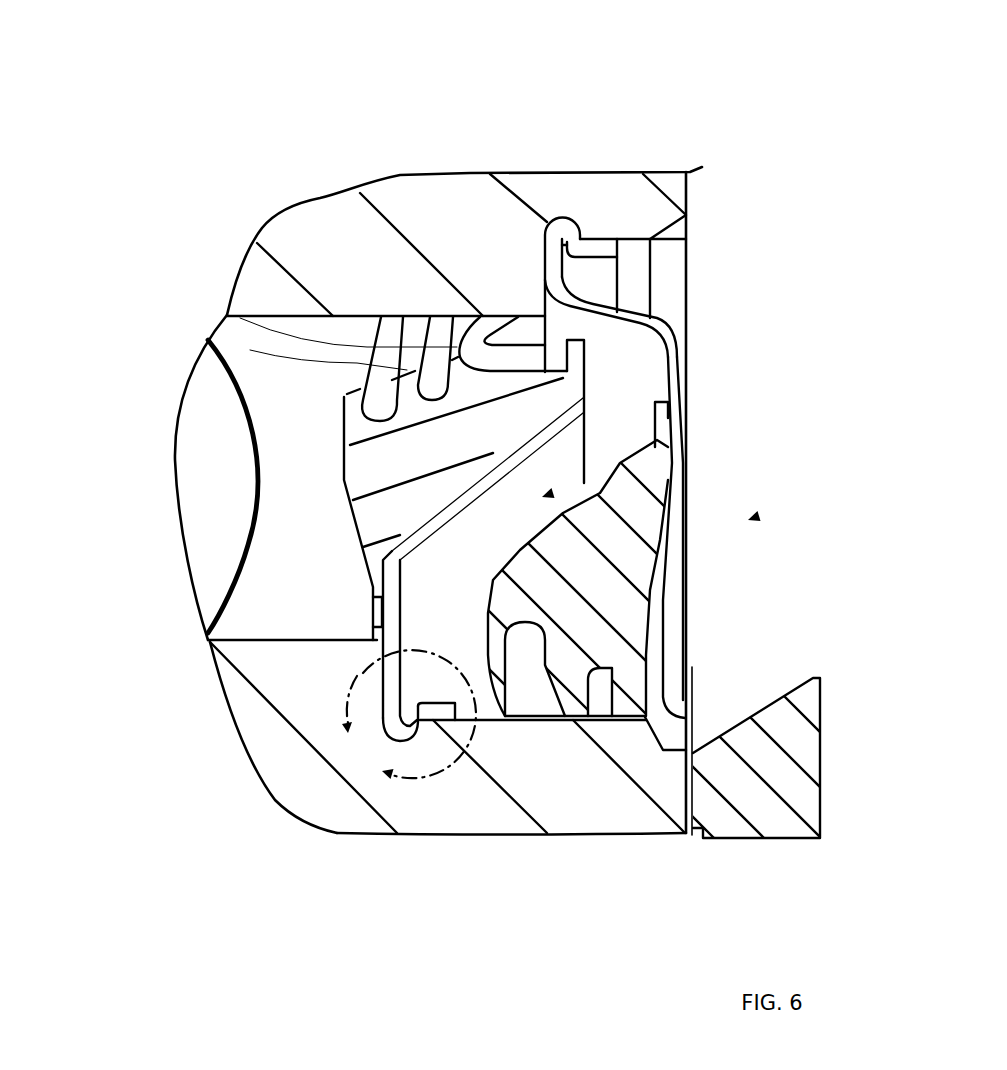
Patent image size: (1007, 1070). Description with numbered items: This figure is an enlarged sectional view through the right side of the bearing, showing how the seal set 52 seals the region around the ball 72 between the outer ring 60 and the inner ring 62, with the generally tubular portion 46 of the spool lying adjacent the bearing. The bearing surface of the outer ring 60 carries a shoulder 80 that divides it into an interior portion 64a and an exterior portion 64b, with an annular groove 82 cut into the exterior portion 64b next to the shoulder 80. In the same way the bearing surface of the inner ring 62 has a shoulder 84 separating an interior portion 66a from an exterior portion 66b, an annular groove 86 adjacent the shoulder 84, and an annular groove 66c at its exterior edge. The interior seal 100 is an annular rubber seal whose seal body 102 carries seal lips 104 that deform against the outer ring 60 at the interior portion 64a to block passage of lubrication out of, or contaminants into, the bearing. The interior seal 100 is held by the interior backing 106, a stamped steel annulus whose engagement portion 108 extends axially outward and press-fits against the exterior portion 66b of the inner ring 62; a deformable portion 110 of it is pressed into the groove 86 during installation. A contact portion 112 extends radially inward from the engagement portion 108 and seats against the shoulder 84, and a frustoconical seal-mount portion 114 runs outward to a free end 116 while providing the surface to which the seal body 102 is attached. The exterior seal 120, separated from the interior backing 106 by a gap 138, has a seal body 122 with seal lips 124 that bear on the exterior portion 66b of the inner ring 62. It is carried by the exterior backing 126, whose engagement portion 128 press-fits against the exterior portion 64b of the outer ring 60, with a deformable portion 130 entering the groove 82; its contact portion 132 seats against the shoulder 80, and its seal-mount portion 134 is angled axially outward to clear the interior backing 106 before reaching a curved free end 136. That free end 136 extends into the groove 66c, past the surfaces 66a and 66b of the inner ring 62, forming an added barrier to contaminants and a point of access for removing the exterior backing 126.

The tubular portion 46 is at (730, 817).
The seal set 52 is at (760, 517).
The outer ring 60 is at (268, 290).
The inner ring 62 is at (283, 760).
The interior portion of bearing surface 64a is at (347, 313).
The exterior portion of bearing surface 64b is at (632, 238).
The interior portion of bearing surface 66a is at (310, 643).
The exterior portion of bearing surface 66b is at (517, 721).
The annular groove 66c is at (692, 835).
The ball 72 is at (197, 533).
The shoulder 80 is at (413, 173).
The annular groove 82 is at (553, 263).
The shoulder 84 is at (372, 712).
The annular groove 86 is at (420, 625).
The interior seal 100 is at (360, 526).
The seal body 102 is at (382, 462).
The seal lips 104 is at (347, 388).
The interior backing 106 is at (383, 608).
The engagement portion 108 is at (420, 625).
The deformable portion 110 is at (425, 660).
The contact portion 112 is at (393, 730).
The seal-mount portion 114 is at (468, 490).
The free end 116 is at (587, 347).
The exterior seal 120 is at (650, 440).
The seal body 122 is at (670, 615).
The seal lips 124 is at (650, 668).
The exterior backing 126 is at (672, 312).
The engagement portion 128 is at (597, 238).
The deformable portion 130 is at (563, 217).
The contact portion 132 is at (545, 298).
The seal-mount portion 134 is at (690, 513).
The free end 136 is at (692, 710).
The gap 138 is at (547, 495).